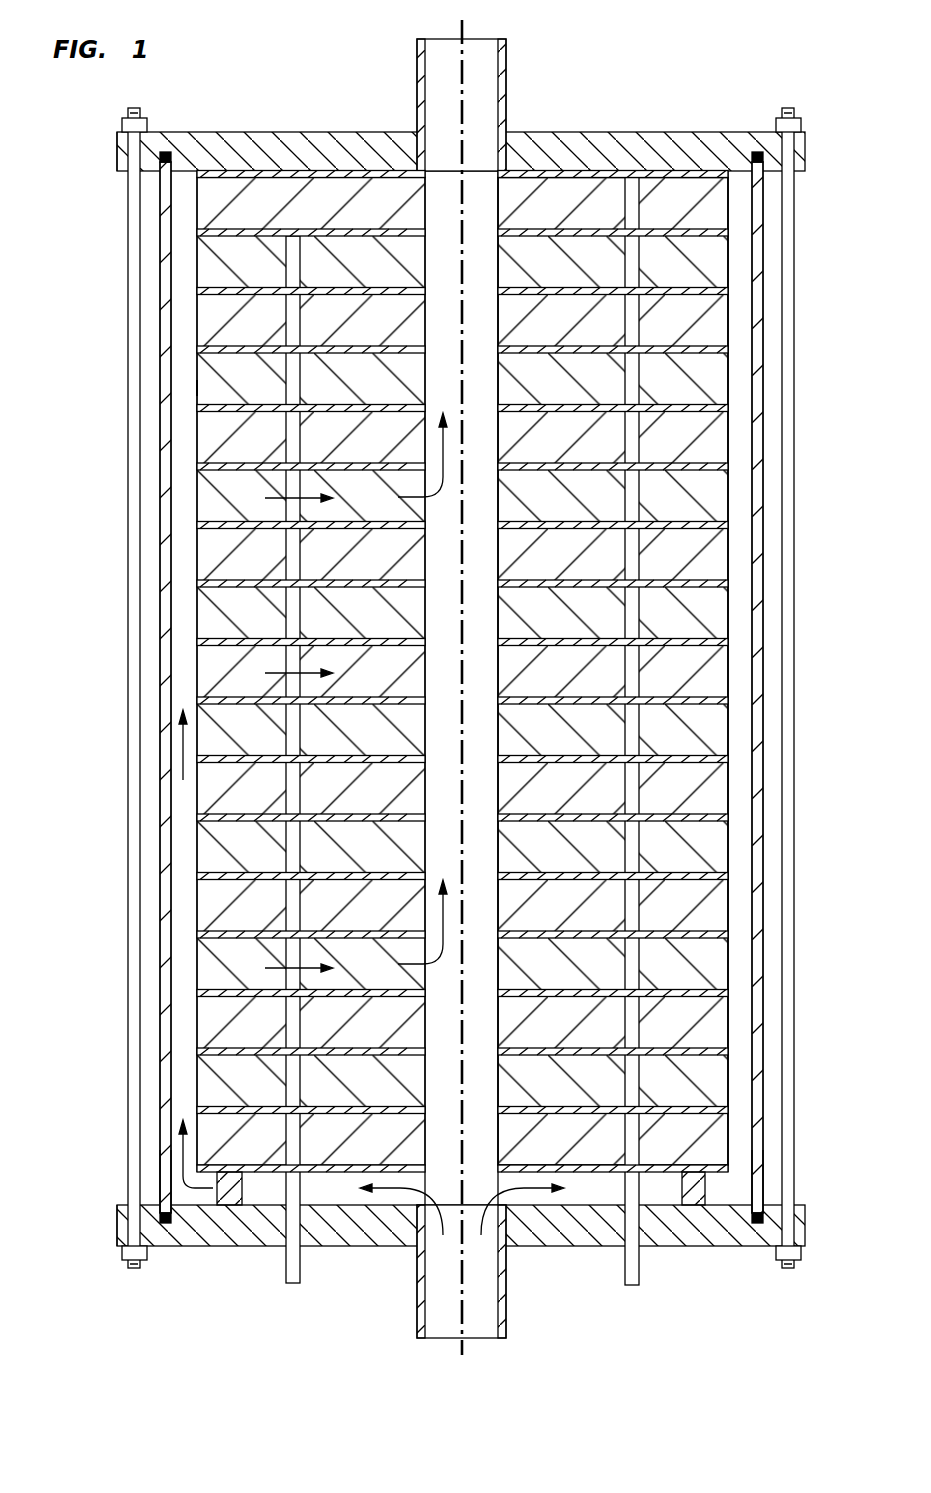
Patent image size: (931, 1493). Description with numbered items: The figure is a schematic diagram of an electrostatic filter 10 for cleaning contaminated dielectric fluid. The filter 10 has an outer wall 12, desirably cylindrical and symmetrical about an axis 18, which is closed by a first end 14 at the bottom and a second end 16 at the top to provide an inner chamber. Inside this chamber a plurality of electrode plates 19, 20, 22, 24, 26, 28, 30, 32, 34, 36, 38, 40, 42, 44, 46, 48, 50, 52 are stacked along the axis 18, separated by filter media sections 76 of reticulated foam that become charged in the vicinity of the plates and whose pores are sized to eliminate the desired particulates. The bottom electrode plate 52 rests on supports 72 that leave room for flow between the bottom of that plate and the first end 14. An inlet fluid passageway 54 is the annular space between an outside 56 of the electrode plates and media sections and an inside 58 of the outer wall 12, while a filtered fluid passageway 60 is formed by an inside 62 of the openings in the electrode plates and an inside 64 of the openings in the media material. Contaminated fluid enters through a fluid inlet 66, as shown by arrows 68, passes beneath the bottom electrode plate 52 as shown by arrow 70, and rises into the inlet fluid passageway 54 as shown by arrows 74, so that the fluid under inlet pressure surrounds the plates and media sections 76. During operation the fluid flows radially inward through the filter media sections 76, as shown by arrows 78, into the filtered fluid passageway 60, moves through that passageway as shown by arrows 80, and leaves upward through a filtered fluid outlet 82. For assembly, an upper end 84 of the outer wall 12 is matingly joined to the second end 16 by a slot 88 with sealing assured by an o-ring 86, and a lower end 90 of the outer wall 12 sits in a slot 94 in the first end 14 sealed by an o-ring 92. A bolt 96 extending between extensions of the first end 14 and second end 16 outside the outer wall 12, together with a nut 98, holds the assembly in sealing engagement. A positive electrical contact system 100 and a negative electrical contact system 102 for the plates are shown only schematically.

The electrostatic filter 10 is at (276, 99).
The outer wall 12 is at (462, 694).
The first end 14 is at (712, 1247).
The second end 16 is at (553, 138).
The axis 18 is at (458, 687).
The electrode plate 19 is at (342, 178).
The electrode plate 20 is at (365, 236).
The electrode plate 22 is at (345, 294).
The electrode plate 24 is at (370, 353).
The electrode plate 26 is at (320, 412).
The electrode plate 28 is at (342, 470).
The electrode plate 30 is at (365, 528).
The electrode plate 32 is at (345, 587).
The electrode plate 34 is at (370, 646).
The electrode plate 36 is at (345, 704).
The electrode plate 38 is at (370, 762).
The electrode plate 40 is at (370, 821).
The electrode plate 42 is at (320, 880).
The electrode plate 44 is at (345, 938).
The electrode plate 46 is at (365, 996).
The electrode plate 48 is at (342, 1055).
The electrode plate 50 is at (370, 1114).
The bottom electrode plate 52 is at (301, 1164).
The inlet fluid passageway 54 is at (178, 357).
The outside of the electrode plates and media sections 56 is at (197, 318).
The inside of outer wall 58 is at (198, 387).
The filtered fluid passageway 60 is at (478, 462).
The inside of the openings in the electrode plates 62 is at (498, 238).
The inside of openings in the media material 64 is at (498, 350).
The fluid inlet 66 is at (503, 1307).
The arrows 68 is at (395, 1192).
The arrow 70 is at (170, 1155).
The supports 72 is at (238, 1192).
The arrows 74 is at (178, 748).
The filter media sections 76 is at (208, 207).
The arrows 78 is at (265, 498).
The arrows 80 is at (442, 452).
The filtered fluid outlet 82 is at (420, 102).
The upper end of outer wall 84 is at (765, 188).
The o-ring 86 is at (165, 152).
The slot 88 is at (152, 167).
The lower end of outer wall 90 is at (158, 1175).
The o-ring 92 is at (755, 1225).
The slot 94 is at (765, 1217).
The bolt 96 is at (130, 400).
The nut 98 is at (122, 122).
The positive electrical contact system 100 is at (287, 324).
The negative electrical contact system 102 is at (640, 325).